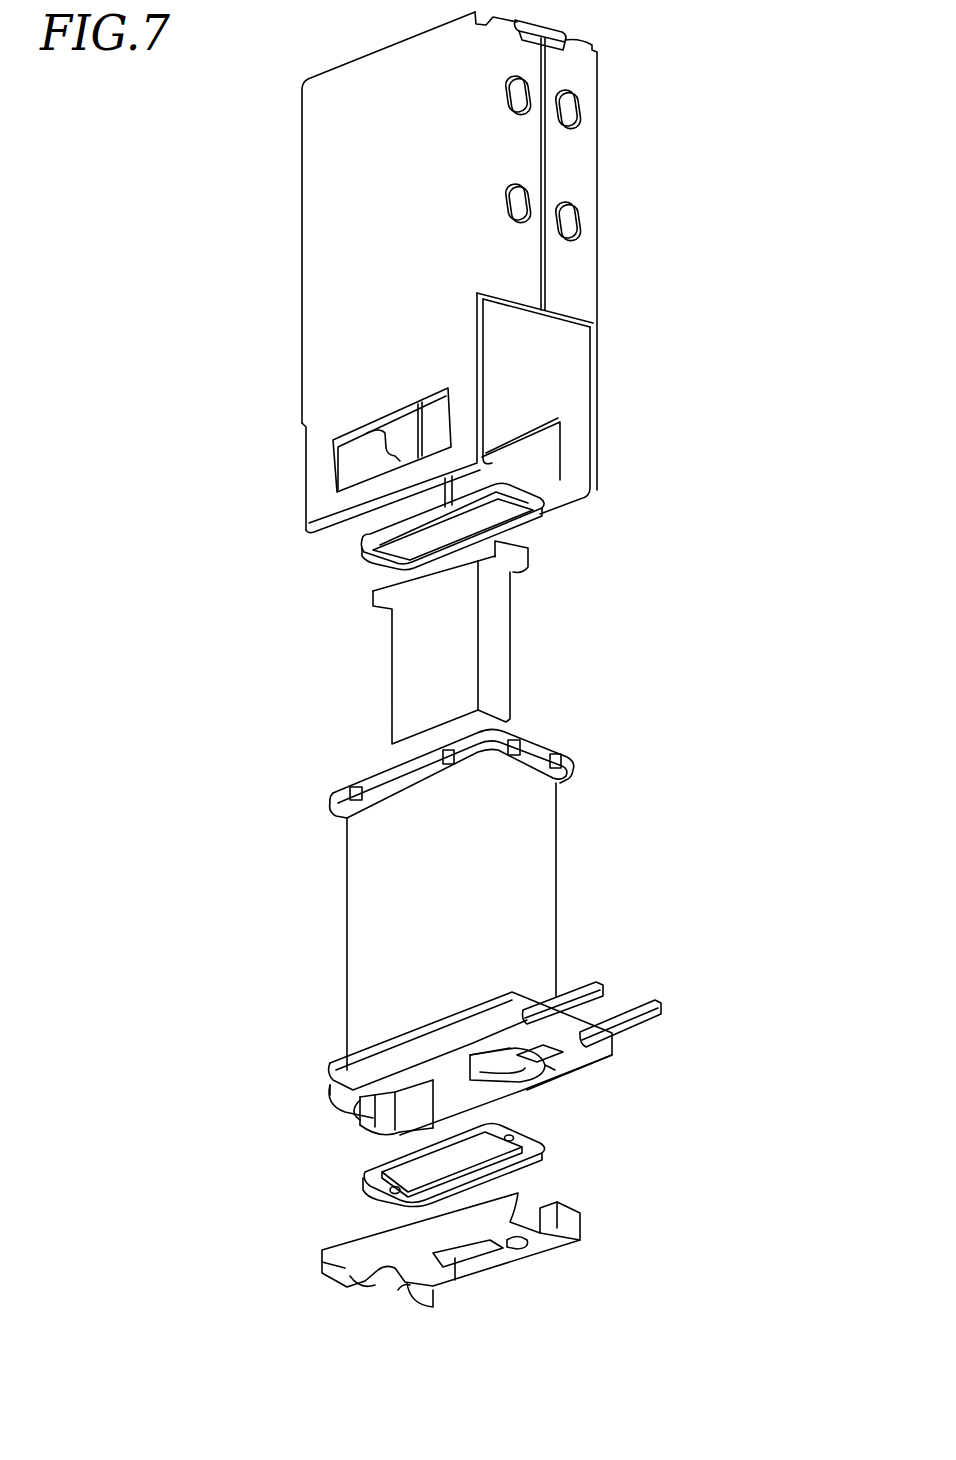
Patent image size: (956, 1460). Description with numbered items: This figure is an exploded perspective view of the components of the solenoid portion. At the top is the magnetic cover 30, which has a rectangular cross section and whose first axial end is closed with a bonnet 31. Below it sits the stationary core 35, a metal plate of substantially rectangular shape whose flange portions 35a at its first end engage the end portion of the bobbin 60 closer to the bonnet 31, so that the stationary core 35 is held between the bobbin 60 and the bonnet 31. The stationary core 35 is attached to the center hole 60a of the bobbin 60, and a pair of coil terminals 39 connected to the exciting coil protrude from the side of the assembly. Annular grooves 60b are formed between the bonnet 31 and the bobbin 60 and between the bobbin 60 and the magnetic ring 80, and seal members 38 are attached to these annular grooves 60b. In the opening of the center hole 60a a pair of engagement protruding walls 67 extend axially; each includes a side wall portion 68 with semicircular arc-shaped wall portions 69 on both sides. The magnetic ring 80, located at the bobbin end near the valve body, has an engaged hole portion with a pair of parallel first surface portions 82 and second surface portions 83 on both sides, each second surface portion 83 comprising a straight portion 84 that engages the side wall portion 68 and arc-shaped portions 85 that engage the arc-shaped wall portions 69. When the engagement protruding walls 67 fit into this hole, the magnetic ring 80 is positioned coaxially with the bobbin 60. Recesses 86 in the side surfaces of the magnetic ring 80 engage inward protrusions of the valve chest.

The magnetic cover 30 is at (330, 199).
The bonnet 31 is at (552, 40).
The stationary core 35 is at (527, 656).
The flange portions 35a is at (520, 554).
The seal members 38 is at (368, 543).
The coil terminals 39 is at (603, 984).
The bobbin 60 is at (586, 831).
The center hole 60a is at (452, 1088).
The annular grooves 60b is at (345, 1090).
The engagement protruding walls 67 is at (540, 1083).
The side wall portion 68 is at (505, 1074).
The arc-shaped wall portions 69 is at (478, 1070).
The magnetic ring 80 is at (598, 1228).
The first surface portions 82 is at (322, 1262).
The second surface portions 83 is at (528, 1246).
The straight portion 84 is at (497, 1248).
The arc-shaped portions 85 is at (425, 1305).
The recesses 86 is at (528, 1215).